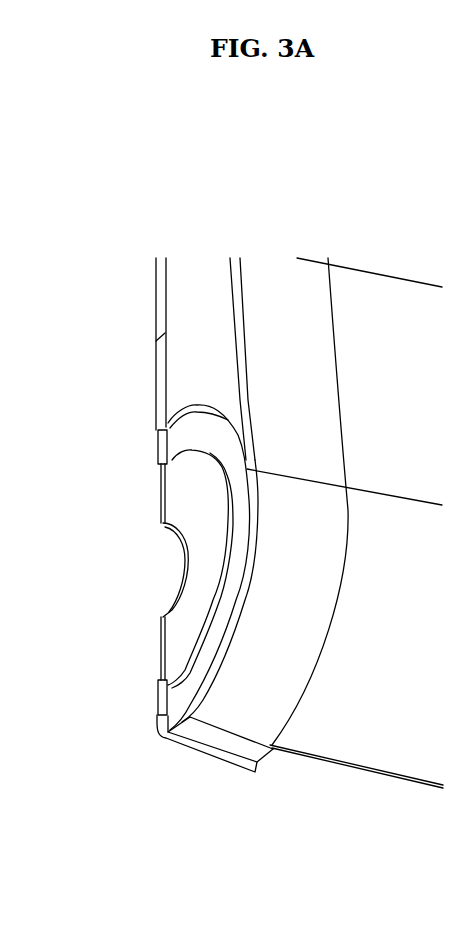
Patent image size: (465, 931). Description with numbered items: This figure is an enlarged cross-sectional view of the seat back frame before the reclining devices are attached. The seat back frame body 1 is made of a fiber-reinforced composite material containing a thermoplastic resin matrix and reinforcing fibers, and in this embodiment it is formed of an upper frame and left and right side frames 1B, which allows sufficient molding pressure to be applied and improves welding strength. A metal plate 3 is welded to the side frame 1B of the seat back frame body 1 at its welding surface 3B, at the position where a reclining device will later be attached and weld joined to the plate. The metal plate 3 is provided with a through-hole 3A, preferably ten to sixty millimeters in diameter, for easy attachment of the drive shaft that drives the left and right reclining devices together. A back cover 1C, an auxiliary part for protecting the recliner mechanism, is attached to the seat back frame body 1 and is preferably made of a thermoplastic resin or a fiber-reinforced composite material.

The seat back frame body 1 is at (118, 310).
The side frame 1B is at (155, 392).
The back cover 1C is at (378, 752).
The metal plate 3 is at (165, 488).
The through-hole 3A is at (185, 572).
The welding surface 3B is at (155, 701).